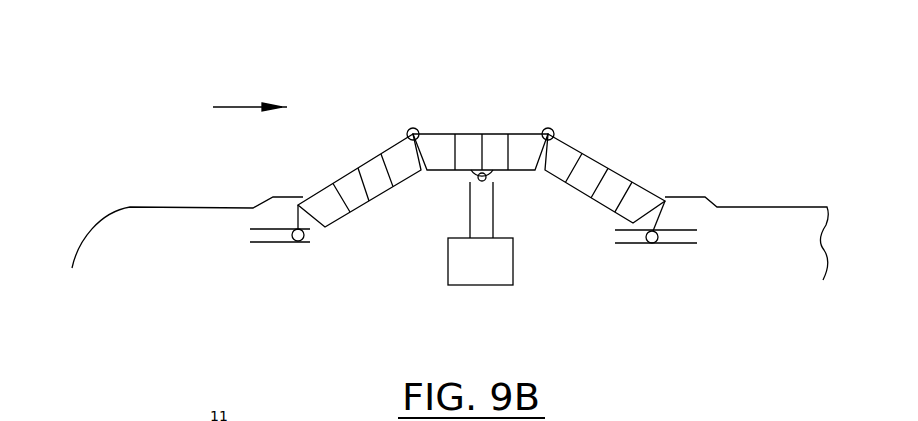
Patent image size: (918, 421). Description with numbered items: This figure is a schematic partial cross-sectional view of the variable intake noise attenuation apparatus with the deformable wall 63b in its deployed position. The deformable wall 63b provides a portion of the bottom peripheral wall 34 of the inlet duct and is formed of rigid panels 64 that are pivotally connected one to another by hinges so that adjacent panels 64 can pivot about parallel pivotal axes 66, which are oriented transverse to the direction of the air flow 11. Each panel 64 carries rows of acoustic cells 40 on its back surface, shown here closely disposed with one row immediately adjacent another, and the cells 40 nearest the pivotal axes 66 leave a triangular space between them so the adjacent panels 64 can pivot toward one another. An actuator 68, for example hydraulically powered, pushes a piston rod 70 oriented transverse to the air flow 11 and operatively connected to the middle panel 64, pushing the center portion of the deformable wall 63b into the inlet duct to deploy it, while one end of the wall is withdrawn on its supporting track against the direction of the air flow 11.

The air flow 11 is at (233, 106).
The bottom peripheral wall 34 is at (690, 195).
The acoustic cells 40 is at (603, 205).
The deformable wall 63b is at (608, 169).
The panels 64 is at (497, 134).
The pivotal axes 66 is at (415, 133).
The actuator 68 is at (513, 282).
The piston rod 70 is at (495, 210).